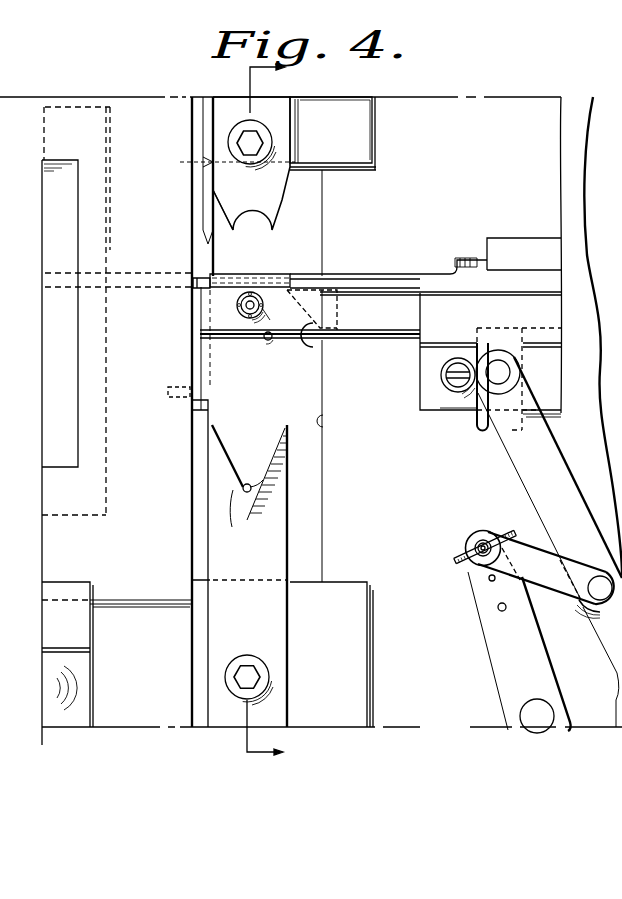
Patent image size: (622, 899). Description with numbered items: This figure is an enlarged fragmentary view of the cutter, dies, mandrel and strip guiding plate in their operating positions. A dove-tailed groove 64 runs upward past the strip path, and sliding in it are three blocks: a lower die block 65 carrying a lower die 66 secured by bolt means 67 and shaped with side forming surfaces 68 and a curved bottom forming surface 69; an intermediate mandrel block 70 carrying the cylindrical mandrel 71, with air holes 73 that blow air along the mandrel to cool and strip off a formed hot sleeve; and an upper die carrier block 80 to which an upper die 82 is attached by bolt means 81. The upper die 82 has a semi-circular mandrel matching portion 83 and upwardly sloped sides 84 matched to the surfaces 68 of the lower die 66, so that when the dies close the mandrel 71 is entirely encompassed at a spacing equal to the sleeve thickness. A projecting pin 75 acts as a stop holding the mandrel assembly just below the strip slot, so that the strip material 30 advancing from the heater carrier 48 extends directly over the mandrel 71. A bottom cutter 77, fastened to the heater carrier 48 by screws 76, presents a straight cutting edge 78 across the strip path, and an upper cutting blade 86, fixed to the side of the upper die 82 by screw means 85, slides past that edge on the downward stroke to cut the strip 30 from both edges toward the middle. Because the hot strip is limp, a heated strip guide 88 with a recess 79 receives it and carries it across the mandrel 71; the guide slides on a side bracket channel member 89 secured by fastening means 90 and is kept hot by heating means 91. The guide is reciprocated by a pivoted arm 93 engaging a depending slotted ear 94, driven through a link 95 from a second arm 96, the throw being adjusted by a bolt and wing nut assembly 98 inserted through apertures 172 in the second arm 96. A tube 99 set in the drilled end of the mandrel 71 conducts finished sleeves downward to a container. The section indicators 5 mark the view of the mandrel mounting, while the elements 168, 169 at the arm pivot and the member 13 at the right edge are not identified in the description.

The section line 5- 5 is at (275, 413).
The frame member 13 is at (588, 287).
The strip material 30 is at (203, 274).
The heater carrier 48 is at (143, 108).
The dove-tailed groove 64 is at (290, 198).
The lower die block 65 is at (348, 693).
The lower die 66 is at (277, 507).
The bolt means 67 is at (248, 670).
The side forming surfaces 68 is at (278, 451).
The curved bottom forming surface 69 is at (246, 517).
The mandrel block 70 is at (313, 344).
The mandrel 71 is at (246, 318).
The air holes 73 is at (265, 313).
The projecting pin 75 is at (265, 346).
The screws 76 is at (177, 393).
The bottom cutter 77 is at (193, 342).
The cutting edge 78 is at (193, 288).
The recess 79 is at (297, 275).
The upper die carrier block 80 is at (348, 137).
The bolt means 81 is at (253, 128).
The upper die 82 is at (275, 113).
The semi-circular mandrel matching portion 83 is at (241, 228).
The upwardly sloped sides 84 is at (227, 211).
The screw means 85 is at (217, 162).
The upper cutting blade 86 is at (203, 200).
The strip guide 88 is at (386, 281).
The side bracket channel member 89 is at (435, 403).
The fastening means 90 is at (442, 382).
The heating means 91 is at (518, 234).
The pivoted arm 93 is at (537, 472).
The depending slotted ear 94 is at (478, 418).
The link 95 is at (540, 568).
The second arm 96 is at (507, 657).
The adjustable bolt and wing nut assembly 98 is at (462, 556).
The tube 99 is at (267, 274).
The pin 168 is at (493, 367).
The pivot 169 is at (500, 348).
The apertures 172 is at (498, 606).